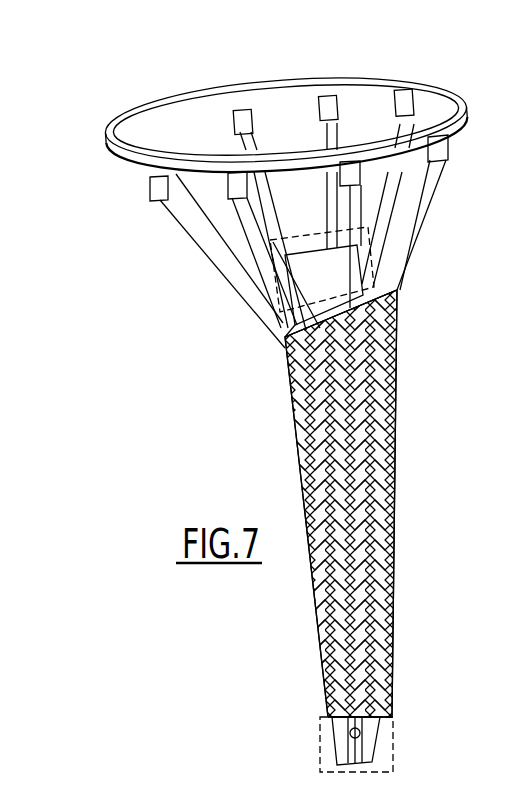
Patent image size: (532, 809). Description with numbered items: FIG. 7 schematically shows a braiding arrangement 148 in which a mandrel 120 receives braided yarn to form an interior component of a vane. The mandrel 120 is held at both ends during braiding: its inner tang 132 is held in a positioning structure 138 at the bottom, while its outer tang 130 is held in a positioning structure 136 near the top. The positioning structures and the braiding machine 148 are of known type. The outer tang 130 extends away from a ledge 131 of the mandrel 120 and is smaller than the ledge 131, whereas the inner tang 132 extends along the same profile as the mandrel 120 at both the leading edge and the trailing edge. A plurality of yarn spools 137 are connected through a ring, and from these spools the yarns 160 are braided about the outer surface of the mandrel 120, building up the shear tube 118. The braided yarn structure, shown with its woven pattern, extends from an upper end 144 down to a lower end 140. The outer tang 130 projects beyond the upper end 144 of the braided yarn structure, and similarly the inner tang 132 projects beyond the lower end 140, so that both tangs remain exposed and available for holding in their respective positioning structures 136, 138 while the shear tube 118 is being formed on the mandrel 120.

The braiding arrangement 148 is at (79, 86).
The yarn spools 137 is at (155, 180).
The yarns 160 is at (193, 240).
The mandrel 120 is at (353, 262).
The positioning structure 136 is at (275, 267).
The outer tang 130 is at (282, 308).
The ledge 131 is at (283, 335).
The upper end 144 is at (395, 287).
The shear tube 118 is at (385, 368).
The lower end 140 is at (330, 720).
The inner tang 132 is at (367, 728).
The positioning structure 138 is at (318, 735).